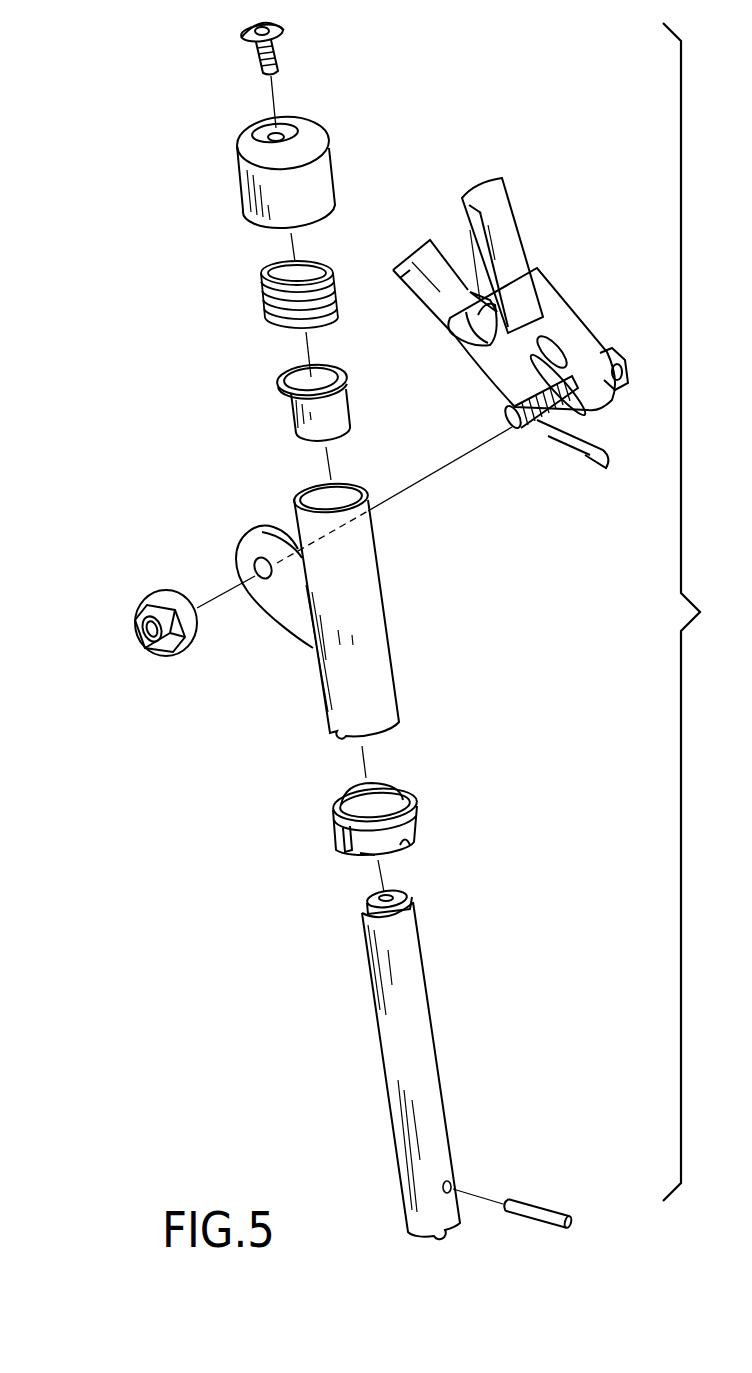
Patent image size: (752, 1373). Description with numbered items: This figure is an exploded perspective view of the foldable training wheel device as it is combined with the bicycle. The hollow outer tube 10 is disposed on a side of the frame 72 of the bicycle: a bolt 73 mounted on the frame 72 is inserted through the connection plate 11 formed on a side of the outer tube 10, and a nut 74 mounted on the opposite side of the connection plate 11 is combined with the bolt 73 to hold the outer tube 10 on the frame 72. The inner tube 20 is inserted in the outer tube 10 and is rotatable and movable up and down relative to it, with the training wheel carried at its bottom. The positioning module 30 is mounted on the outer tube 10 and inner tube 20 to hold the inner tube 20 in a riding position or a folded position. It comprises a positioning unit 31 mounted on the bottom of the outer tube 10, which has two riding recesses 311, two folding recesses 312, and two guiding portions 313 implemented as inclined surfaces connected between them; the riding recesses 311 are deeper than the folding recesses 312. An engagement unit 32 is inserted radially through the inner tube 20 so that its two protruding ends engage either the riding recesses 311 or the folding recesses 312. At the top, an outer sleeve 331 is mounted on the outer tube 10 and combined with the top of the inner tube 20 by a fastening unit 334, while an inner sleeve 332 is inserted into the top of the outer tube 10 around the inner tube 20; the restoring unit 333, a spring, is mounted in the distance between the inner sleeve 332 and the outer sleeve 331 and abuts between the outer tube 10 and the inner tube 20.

The outer tube 10 is at (383, 650).
The connection plate 11 is at (283, 603).
The inner tube 20 is at (395, 1073).
The positioning module 30 is at (183, 862).
The positioning unit 31 is at (380, 837).
The riding recess 311 is at (347, 850).
The folding recess 312 is at (407, 843).
The guiding portion 313 is at (367, 847).
The engagement unit 32 is at (533, 1213).
The outer sleeve 331 is at (258, 188).
The inner sleeve 332 is at (292, 408).
The restoring unit 333 is at (262, 290).
The fastening unit 334 is at (250, 37).
The frame 72 is at (508, 228).
The bolt 73 is at (535, 428).
The nut 74 is at (162, 603).